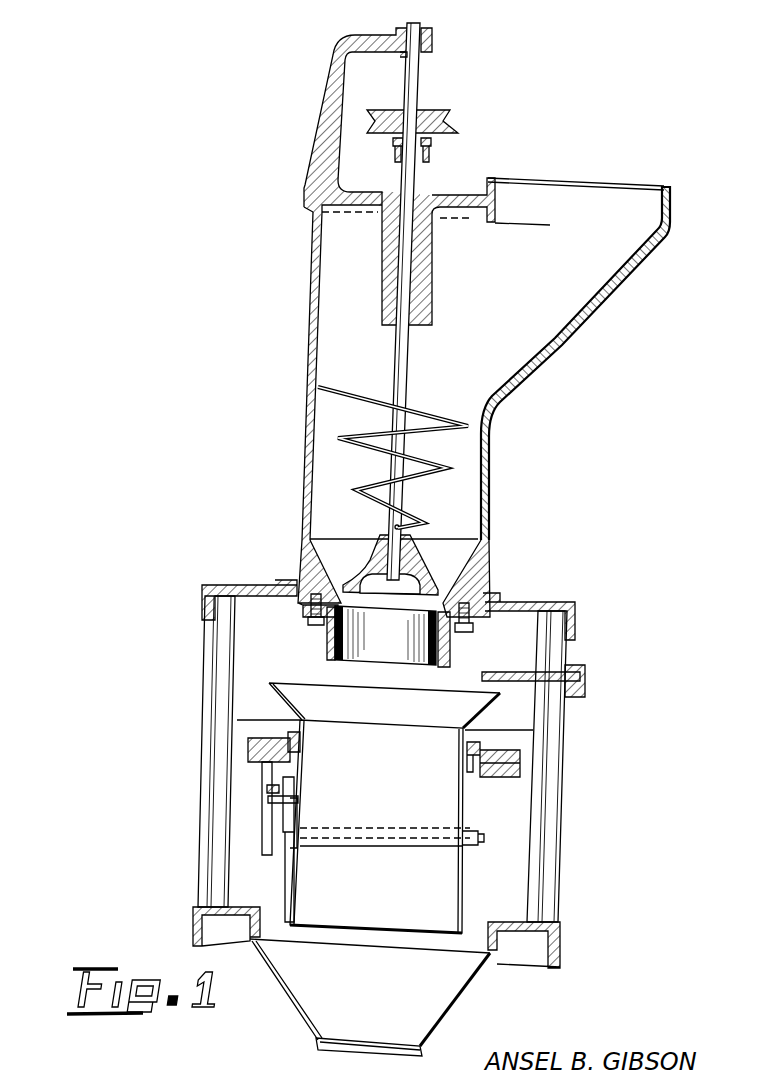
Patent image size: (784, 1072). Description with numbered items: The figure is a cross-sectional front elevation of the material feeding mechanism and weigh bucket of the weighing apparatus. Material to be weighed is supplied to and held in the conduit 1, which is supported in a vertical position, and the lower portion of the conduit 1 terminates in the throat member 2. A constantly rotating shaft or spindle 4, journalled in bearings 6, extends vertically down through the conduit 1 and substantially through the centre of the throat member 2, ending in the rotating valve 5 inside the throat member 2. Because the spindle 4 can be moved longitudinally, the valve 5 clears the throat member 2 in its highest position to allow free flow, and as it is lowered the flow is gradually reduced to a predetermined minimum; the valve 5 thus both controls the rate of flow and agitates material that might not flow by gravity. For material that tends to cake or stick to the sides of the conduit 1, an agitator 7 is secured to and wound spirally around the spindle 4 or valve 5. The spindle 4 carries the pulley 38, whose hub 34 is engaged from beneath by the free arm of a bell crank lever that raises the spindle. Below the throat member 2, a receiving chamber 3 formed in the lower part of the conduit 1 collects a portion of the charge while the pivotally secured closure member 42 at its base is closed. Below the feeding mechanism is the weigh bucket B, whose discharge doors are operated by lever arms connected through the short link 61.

The conduit 1 is at (478, 447).
The throat member 2 is at (457, 569).
The receiving chamber 3 is at (449, 650).
The spindle 4 is at (407, 378).
The rotating valve 5 is at (423, 572).
The bearings 6 is at (432, 40).
The agitator 7 is at (443, 418).
The hub 34 is at (430, 146).
The pulley 38 is at (446, 115).
The closure member 42 is at (493, 671).
The short link 61 is at (290, 800).
The receiving hopper B is at (287, 690).